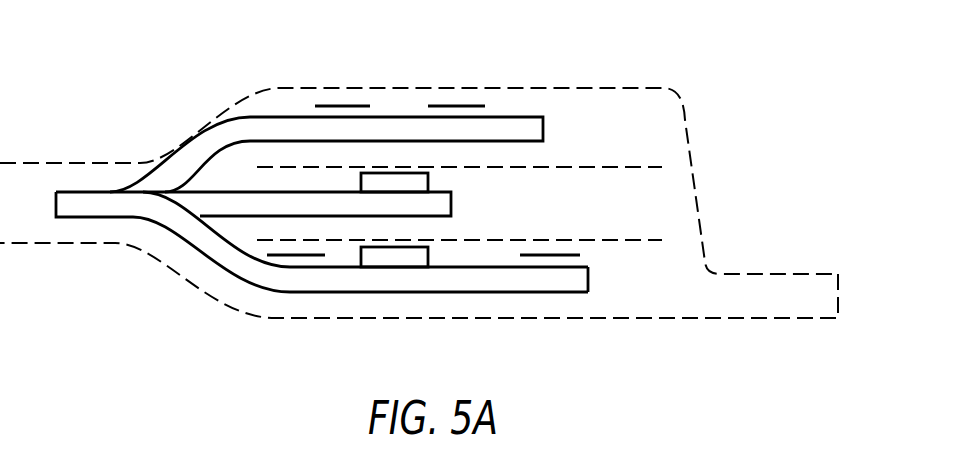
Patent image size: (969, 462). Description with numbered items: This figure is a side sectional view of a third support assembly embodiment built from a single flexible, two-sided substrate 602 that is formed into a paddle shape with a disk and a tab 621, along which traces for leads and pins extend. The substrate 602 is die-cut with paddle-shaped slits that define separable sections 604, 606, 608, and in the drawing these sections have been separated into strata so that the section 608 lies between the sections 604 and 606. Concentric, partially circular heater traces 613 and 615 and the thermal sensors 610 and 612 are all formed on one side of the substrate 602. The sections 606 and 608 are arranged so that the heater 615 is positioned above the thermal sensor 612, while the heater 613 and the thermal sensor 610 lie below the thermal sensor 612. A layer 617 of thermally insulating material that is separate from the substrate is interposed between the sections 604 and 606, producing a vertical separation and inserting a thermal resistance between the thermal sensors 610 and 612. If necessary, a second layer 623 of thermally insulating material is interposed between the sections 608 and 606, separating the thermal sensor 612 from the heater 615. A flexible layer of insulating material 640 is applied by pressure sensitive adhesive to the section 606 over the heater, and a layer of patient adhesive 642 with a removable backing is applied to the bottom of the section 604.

The tab 621 is at (88, 186).
The substrate 602 is at (98, 219).
The section 606 is at (545, 128).
The section 608 is at (452, 203).
The section 604 is at (590, 277).
The thermal sensor 612 is at (428, 185).
The thermal sensor 610 is at (422, 247).
The heater trace 613 is at (332, 105).
The heater trace 615 is at (295, 255).
The flexible layer of insulating material 640 is at (528, 89).
The layer of patient adhesive 642 is at (630, 318).
The second layer of thermally insulating material 623 is at (627, 167).
The layer of thermally insulating material 617 is at (643, 240).